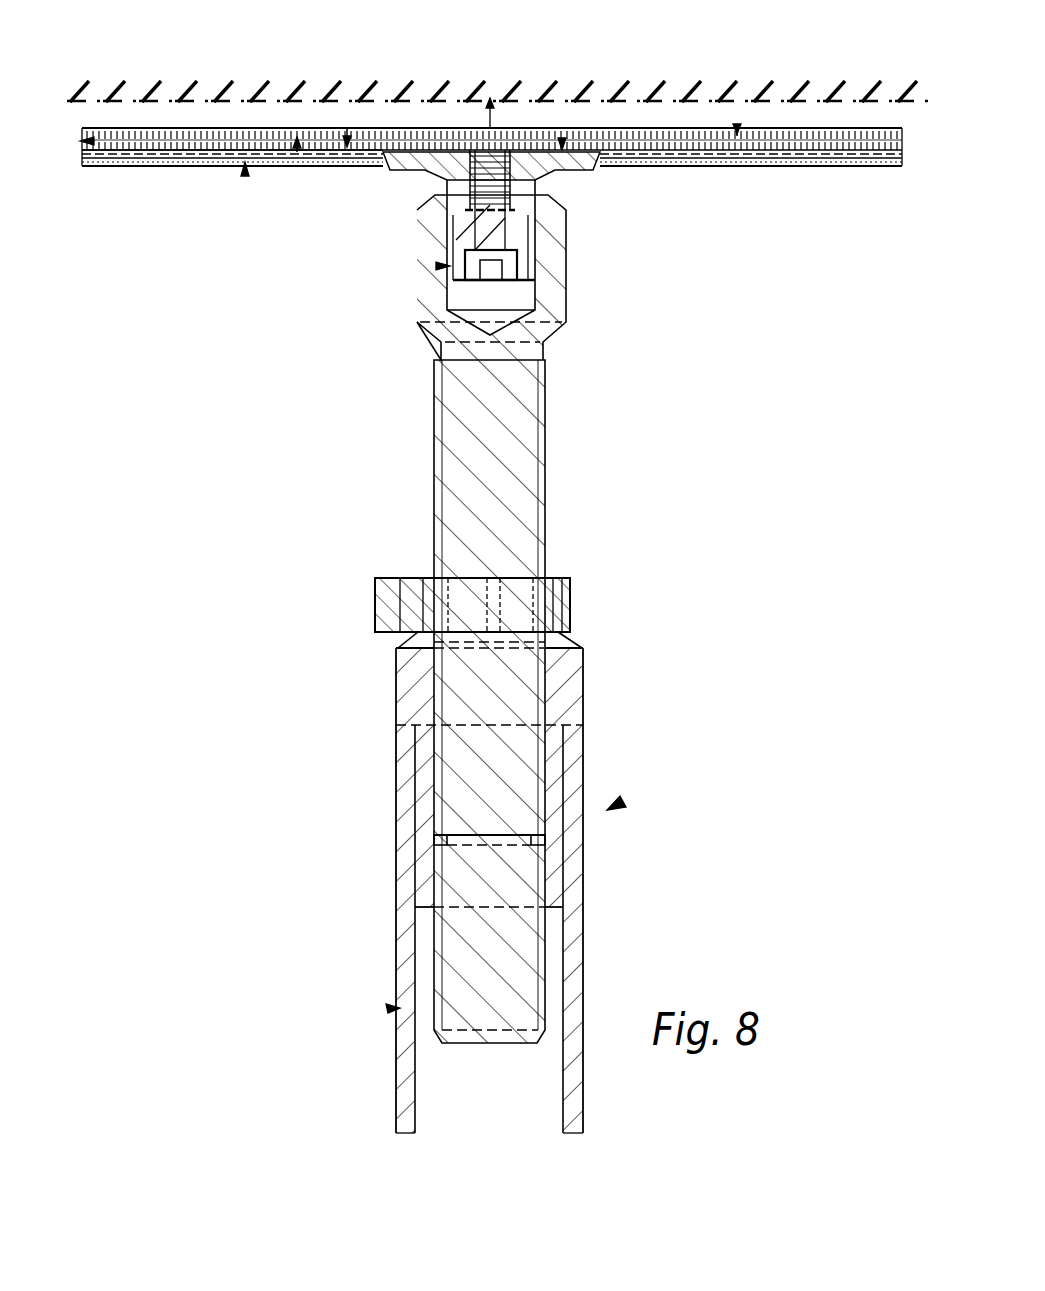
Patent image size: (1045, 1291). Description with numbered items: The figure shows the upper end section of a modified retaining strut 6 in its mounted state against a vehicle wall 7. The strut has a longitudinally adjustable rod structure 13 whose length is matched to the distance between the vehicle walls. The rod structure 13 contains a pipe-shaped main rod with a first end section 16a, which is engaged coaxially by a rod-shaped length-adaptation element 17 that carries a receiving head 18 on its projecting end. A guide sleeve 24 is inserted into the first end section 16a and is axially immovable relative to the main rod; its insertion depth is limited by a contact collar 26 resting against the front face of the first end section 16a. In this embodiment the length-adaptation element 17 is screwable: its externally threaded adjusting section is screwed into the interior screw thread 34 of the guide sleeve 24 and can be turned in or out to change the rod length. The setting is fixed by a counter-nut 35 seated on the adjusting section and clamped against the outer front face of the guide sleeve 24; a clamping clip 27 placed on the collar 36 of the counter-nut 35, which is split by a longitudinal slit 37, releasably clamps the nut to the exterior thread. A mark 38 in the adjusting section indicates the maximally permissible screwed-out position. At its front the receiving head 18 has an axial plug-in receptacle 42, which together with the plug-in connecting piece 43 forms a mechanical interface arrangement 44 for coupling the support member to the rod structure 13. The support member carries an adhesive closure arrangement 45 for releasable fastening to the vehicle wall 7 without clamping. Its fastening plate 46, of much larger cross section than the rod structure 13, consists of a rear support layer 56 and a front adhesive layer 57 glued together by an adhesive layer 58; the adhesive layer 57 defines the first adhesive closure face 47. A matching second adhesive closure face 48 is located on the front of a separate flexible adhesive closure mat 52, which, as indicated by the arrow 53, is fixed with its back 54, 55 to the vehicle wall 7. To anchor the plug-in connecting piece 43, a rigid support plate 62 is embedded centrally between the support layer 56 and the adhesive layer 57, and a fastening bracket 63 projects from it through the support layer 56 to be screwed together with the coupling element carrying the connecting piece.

The retaining strut 6 is at (614, 806).
The vehicle wall 7 is at (212, 80).
The rod structure 13 is at (388, 1009).
The first end section 16a is at (577, 752).
The length-adaptation element 17 is at (520, 420).
The receiving head 18 is at (553, 262).
The guide sleeve 24 is at (560, 850).
The contact collar 26 is at (567, 680).
The clamping clip 27 is at (418, 578).
The interior screw thread 34 is at (440, 795).
The counter-nut 35 is at (572, 643).
The collar 36 is at (560, 577).
The longitudinal slit 37 is at (490, 578).
The mark 38 is at (437, 838).
The plug-in receptacle 42 is at (525, 290).
The plug-in connecting piece 43 is at (527, 230).
The mechanical interface arrangement 44 is at (438, 266).
The adhesive closure arrangement 45 is at (90, 141).
The fastening plate 46 is at (245, 178).
The first adhesive closure face 47 is at (349, 128).
The second adhesive closure face 48 is at (297, 150).
The adhesive closure mat 52 is at (668, 130).
The arrow 53 is at (492, 120).
The back 54 is at (739, 125).
The layer 55 is at (737, 130).
The support layer 56 is at (858, 168).
The adhesive layer 57 is at (761, 152).
The adhesive layer 58 is at (812, 158).
The support plate 62 is at (563, 140).
The fastening bracket 63 is at (540, 178).